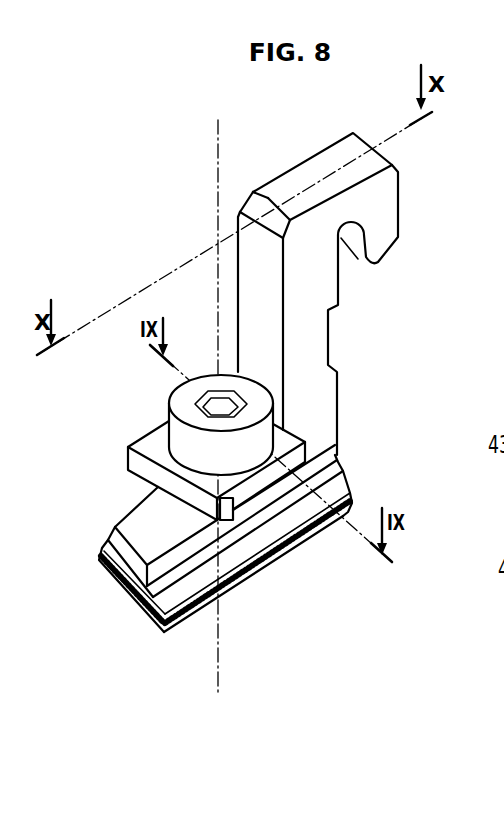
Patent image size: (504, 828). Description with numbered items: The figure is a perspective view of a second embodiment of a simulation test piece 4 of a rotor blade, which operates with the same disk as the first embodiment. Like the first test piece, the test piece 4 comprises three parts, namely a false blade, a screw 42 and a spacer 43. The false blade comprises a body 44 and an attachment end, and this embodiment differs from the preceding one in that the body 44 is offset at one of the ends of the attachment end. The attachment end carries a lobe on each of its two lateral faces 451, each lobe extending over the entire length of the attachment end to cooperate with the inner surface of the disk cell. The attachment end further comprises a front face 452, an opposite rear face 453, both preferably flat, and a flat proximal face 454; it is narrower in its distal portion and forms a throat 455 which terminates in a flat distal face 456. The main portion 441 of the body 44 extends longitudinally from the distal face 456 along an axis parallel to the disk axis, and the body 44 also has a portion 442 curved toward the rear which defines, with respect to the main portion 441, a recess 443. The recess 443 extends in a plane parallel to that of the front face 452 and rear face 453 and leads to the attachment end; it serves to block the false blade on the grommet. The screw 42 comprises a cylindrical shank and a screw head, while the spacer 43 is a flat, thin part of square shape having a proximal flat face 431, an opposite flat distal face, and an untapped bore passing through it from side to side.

The simulation test piece 4 is at (158, 249).
The screw 42 is at (262, 433).
The spacer 43 is at (154, 442).
The proximal flat face 431 is at (486, 481).
The body 44 is at (371, 294).
The main portion 441 is at (472, 352).
The curved portion 442 is at (380, 216).
The recess 443 is at (348, 264).
The lateral face 451 is at (248, 548).
The front face 452 is at (121, 589).
The rear face 453 is at (356, 474).
The proximal face 454 is at (238, 600).
The throat 455 is at (108, 540).
The distal face 456 is at (150, 522).